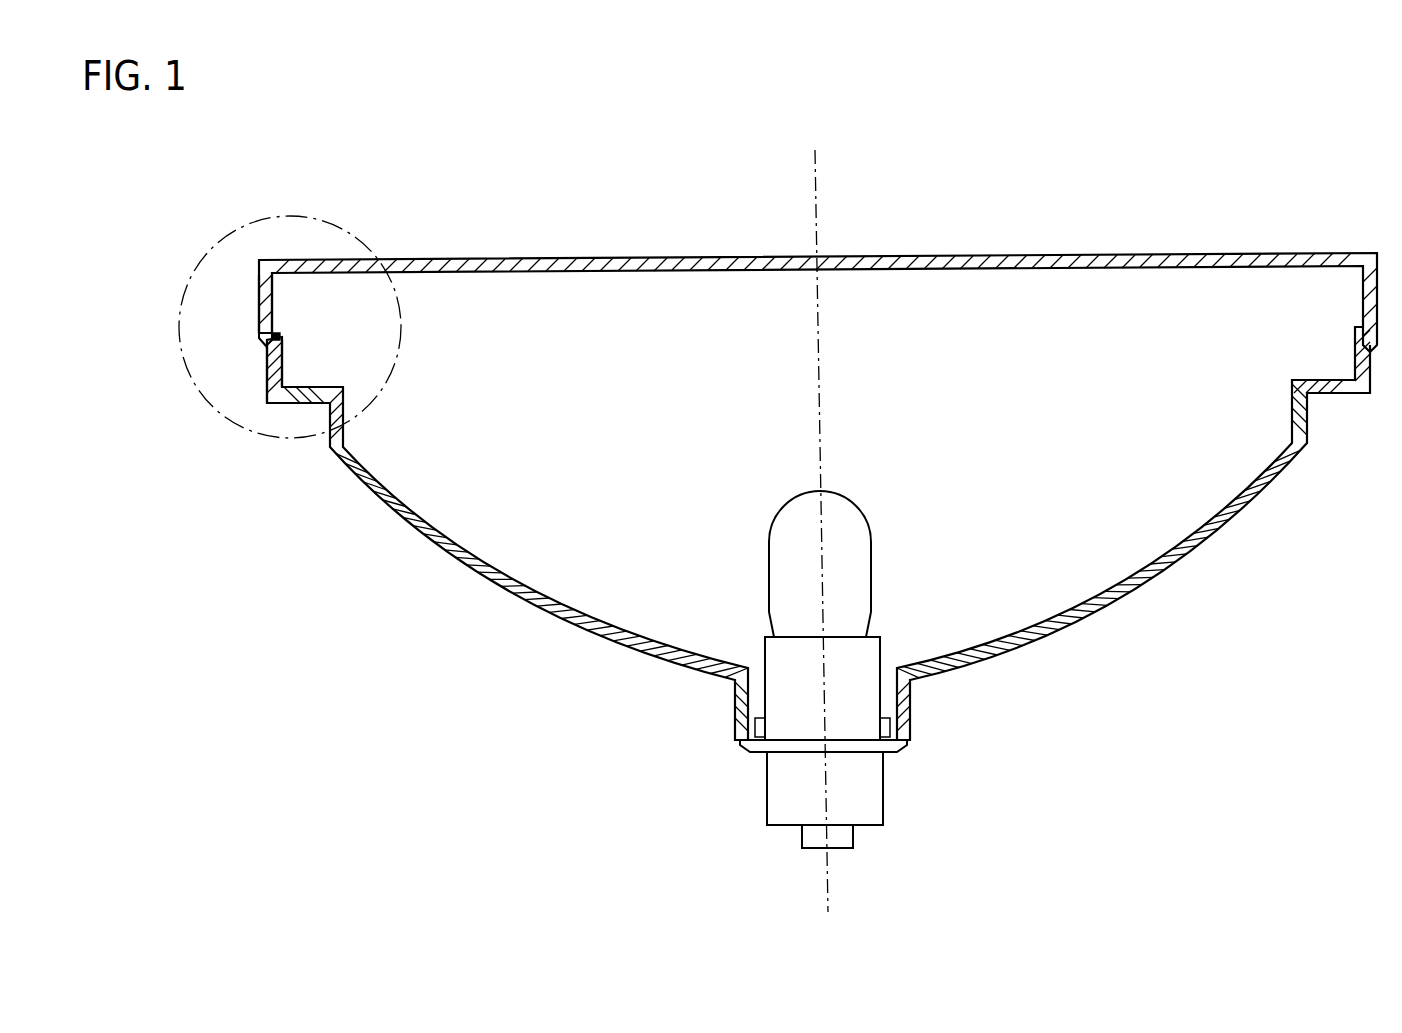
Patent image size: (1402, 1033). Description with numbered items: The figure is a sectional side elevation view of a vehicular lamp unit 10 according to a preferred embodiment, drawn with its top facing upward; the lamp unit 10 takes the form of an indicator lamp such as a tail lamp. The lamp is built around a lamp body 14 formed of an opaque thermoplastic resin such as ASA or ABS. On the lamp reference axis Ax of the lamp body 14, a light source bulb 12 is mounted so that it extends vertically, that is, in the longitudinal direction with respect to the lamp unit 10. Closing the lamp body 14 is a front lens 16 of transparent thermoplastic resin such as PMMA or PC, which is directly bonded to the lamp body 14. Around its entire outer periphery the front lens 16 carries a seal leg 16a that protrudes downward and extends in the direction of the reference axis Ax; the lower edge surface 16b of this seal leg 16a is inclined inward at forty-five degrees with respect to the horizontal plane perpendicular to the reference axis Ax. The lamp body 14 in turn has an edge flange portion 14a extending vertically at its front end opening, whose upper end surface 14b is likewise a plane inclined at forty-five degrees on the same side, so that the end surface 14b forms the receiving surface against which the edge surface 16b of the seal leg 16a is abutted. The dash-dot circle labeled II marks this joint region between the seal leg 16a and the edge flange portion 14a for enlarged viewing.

The vehicular lamp unit 10 is at (1153, 210).
The light source bulb 12 is at (788, 497).
The lamp body 14 is at (545, 638).
The edge flange portion 14a is at (263, 378).
The end surface of the edge flange portion 14b is at (275, 335).
The front lens 16 is at (600, 245).
The seal leg 16a is at (257, 297).
The edge surface of the seal leg 16b is at (258, 340).
The lamp reference axis Ax is at (818, 210).
The section II enlarged region II is at (277, 437).